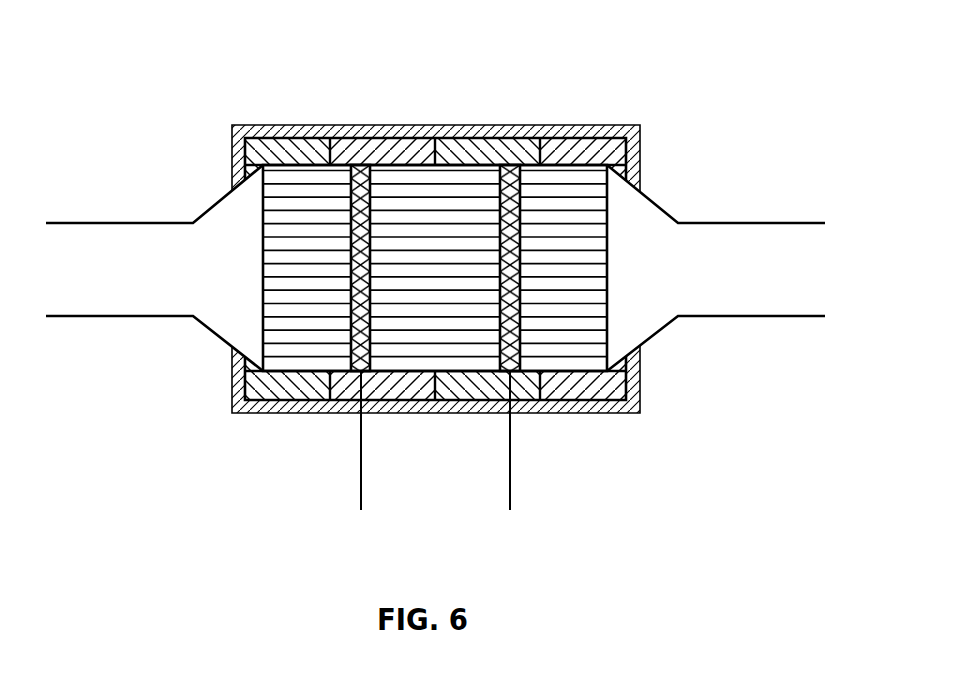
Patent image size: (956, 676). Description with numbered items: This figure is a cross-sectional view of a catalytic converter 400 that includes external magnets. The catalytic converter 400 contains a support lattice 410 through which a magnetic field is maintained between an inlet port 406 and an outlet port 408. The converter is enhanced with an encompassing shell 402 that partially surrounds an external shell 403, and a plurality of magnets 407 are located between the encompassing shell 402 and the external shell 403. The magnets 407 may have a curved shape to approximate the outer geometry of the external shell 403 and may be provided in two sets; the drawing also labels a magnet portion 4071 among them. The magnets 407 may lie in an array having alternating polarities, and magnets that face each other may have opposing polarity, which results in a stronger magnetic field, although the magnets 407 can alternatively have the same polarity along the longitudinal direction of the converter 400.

The catalytic converter 400 is at (435, 267).
The encompassing shell 402 is at (566, 163).
The external shell 403 is at (396, 132).
The inlet port 406 is at (740, 317).
The magnet 407 is at (357, 143).
The mat segment 4071 is at (305, 143).
The outlet port 408 is at (137, 223).
The support lattice 410 is at (477, 178).